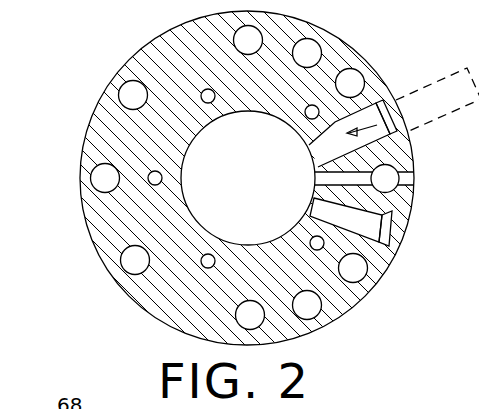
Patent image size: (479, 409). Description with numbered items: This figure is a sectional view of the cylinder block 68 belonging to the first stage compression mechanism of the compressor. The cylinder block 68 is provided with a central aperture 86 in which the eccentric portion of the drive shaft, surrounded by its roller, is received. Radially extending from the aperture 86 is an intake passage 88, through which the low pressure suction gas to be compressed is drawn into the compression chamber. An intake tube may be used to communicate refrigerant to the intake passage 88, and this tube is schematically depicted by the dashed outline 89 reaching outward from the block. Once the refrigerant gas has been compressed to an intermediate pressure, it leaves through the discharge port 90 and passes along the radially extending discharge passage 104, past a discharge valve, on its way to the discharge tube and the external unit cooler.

The cylinder block 68 is at (357, 34).
The aperture 86 is at (203, 187).
The intake passage 88 is at (388, 103).
The dashed outline 89 is at (452, 117).
The discharge port 90 is at (313, 201).
The discharge passage 104 is at (404, 244).